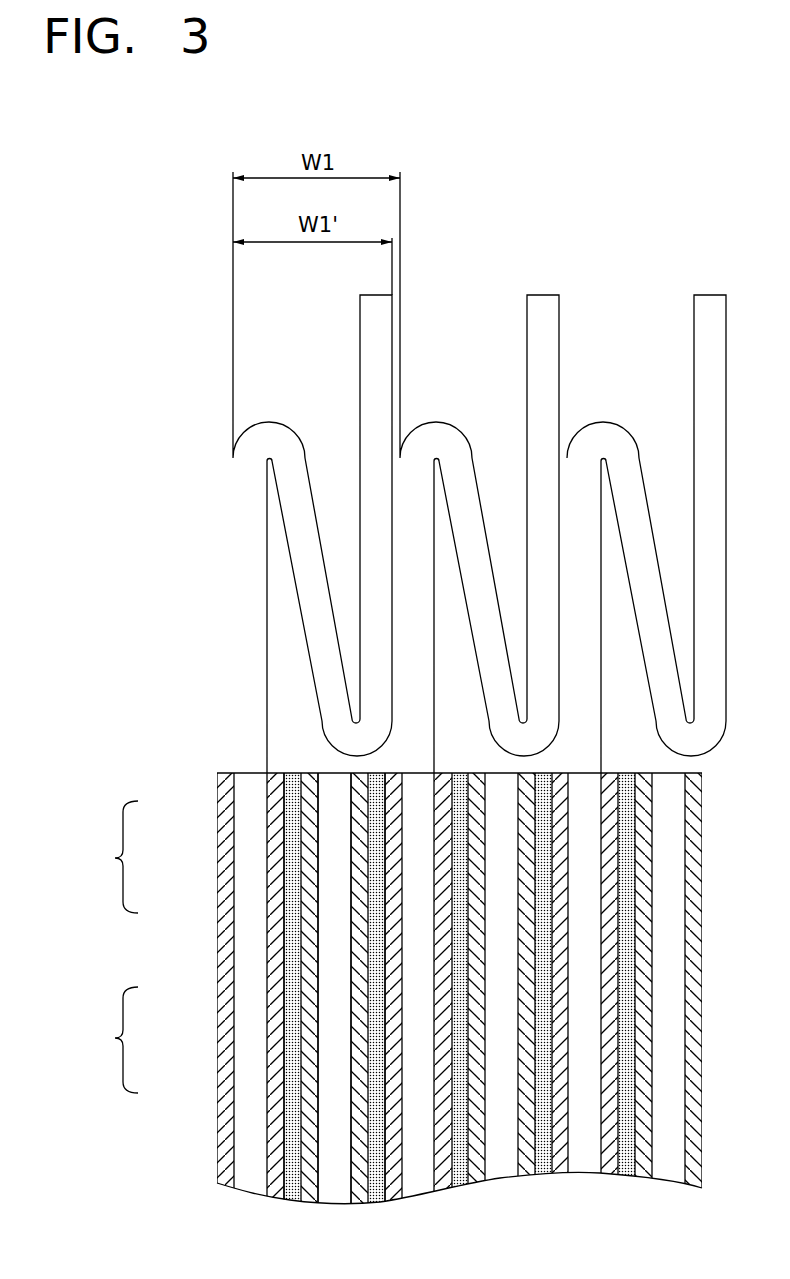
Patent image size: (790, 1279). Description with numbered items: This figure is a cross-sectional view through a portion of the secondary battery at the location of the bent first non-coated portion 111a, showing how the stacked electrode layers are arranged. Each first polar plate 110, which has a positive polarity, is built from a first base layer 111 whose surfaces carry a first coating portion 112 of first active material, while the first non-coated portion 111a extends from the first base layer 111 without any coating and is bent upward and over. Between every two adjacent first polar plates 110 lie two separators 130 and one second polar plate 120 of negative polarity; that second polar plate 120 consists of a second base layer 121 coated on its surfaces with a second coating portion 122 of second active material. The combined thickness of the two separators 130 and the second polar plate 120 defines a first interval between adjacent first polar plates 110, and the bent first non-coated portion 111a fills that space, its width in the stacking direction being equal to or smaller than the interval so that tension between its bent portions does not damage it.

The first polar plate 110 is at (178, 991).
The first base layer 111 is at (252, 858).
The first non-coated portion 111a is at (367, 357).
The first coating portion 112 is at (226, 806).
The second polar plate 120 is at (105, 1040).
The second base layer 121 is at (335, 1037).
The second coating portion 122 is at (312, 994).
The separator 130 is at (292, 952).